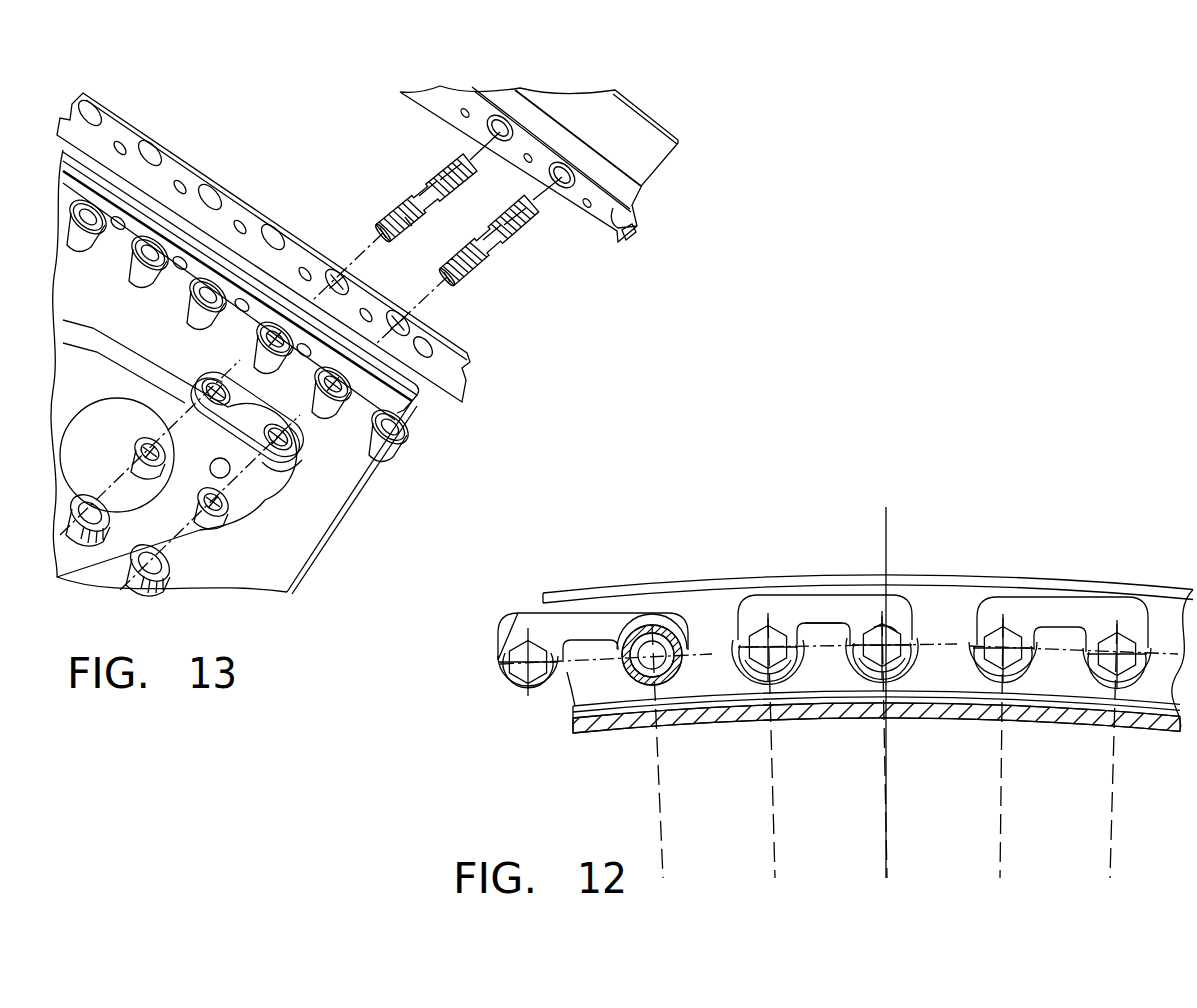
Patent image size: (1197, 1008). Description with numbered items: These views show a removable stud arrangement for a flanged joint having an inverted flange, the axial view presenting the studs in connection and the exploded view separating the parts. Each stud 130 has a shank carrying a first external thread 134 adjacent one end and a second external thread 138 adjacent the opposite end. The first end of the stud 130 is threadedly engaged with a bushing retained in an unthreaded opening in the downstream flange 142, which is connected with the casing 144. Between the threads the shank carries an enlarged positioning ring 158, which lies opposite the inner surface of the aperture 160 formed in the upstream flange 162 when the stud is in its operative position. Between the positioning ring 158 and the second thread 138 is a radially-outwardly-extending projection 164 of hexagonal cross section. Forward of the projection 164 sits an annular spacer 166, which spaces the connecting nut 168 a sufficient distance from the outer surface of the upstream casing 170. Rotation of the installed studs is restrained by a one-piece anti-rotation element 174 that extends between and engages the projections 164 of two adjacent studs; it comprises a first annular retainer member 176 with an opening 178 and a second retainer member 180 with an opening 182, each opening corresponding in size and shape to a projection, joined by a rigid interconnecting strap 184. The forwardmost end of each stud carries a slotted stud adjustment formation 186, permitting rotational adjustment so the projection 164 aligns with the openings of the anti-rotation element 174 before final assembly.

In FIG. 13, the stud 130 is at (415, 205).
In FIG. 13, the first external thread 134 is at (466, 176).
In FIG. 13, the second external thread 138 is at (437, 222).
In FIG. 13, the downstream flange 142 is at (613, 240).
In FIG. 13, the casing 144 is at (655, 130).
In FIG. 13, the positioning ring 158 is at (458, 160).
In FIG. 13, the aperture 160 is at (255, 342).
In FIG. 13, the upstream flange 162 is at (400, 405).
In FIG. 12, the upstream flange 162 is at (965, 598).
In FIG. 13, the projection 164 is at (432, 190).
In FIG. 13, the annular spacer 166 is at (140, 444).
In FIG. 12, the annular spacer 166 is at (657, 628).
In FIG. 13, the connecting nut 168 is at (93, 505).
In FIG. 13, the upstream casing 170 is at (325, 508).
In FIG. 12, the upstream casing 170 is at (918, 722).
In FIG. 13, the anti-rotation element 174 is at (302, 415).
In FIG. 12, the anti-rotation element 174 is at (503, 632).
In FIG. 13, the first annular retainer member 176 is at (205, 390).
In FIG. 12, the first annular retainer member 176 is at (760, 662).
In FIG. 12, the opening 178 is at (748, 677).
In FIG. 13, the second retainer member 180 is at (288, 464).
In FIG. 12, the second retainer member 180 is at (905, 668).
In FIG. 12, the opening 182 is at (894, 638).
In FIG. 13, the interconnecting strap 184 is at (250, 434).
In FIG. 12, the interconnecting strap 184 is at (830, 596).
In FIG. 13, the stud adjustment formation 186 is at (383, 235).